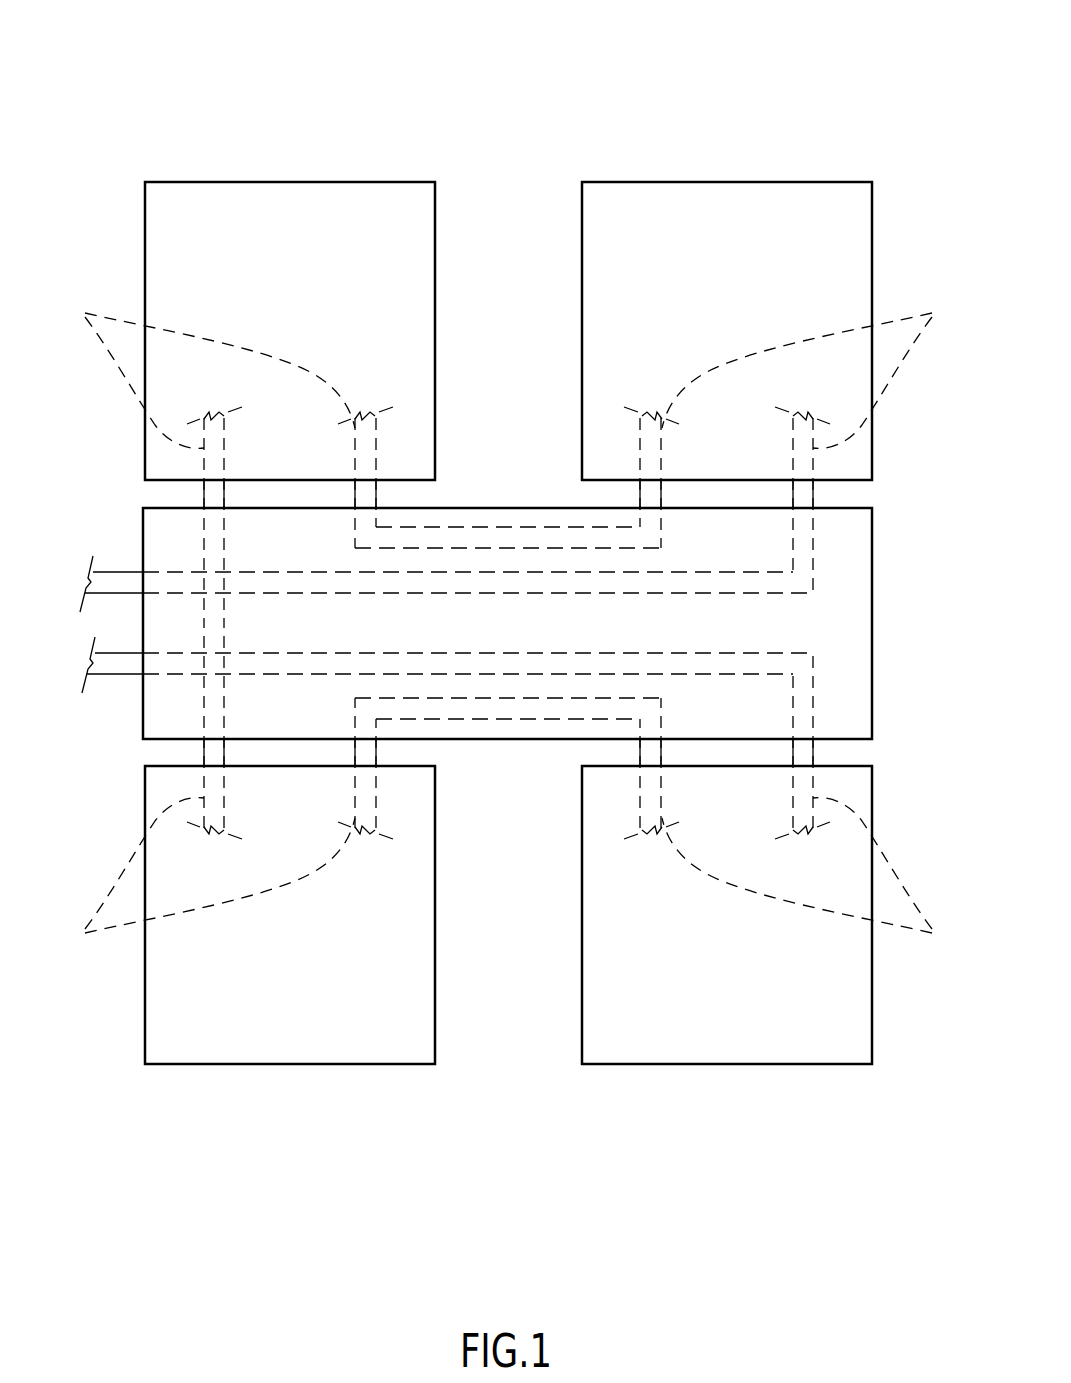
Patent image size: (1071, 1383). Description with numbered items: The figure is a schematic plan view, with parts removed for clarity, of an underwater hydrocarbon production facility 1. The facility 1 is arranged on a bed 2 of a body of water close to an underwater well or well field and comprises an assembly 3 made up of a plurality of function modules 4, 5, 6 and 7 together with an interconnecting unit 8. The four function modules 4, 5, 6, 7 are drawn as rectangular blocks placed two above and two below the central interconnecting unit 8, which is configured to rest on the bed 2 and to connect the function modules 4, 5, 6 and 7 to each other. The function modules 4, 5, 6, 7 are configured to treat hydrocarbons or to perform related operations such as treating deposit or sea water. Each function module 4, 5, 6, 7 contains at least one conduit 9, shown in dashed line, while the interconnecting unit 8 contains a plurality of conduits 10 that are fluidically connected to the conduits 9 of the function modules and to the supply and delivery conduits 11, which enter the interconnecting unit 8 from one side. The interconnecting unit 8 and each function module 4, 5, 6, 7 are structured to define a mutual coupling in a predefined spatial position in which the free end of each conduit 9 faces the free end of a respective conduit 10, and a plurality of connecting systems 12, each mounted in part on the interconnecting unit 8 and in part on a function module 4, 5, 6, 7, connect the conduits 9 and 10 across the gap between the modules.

The underwater hydrocarbon production facility 1 is at (878, 42).
The bed 2 is at (115, 145).
The assembly 3 is at (900, 145).
The function module 4 is at (300, 304).
The function module 5 is at (737, 304).
The function module 6 is at (737, 978).
The function module 7 is at (300, 978).
The interconnecting unit 8 is at (873, 623).
The conduit 9 is at (508, 624).
The conduit 10 is at (213, 606).
The supply and delivery conduit 11 is at (105, 668).
The connecting system 12 is at (182, 497).